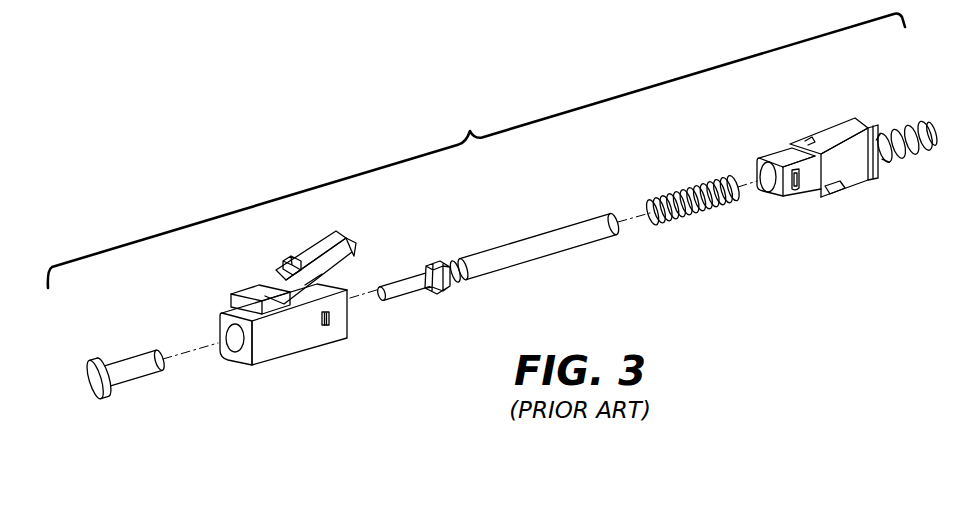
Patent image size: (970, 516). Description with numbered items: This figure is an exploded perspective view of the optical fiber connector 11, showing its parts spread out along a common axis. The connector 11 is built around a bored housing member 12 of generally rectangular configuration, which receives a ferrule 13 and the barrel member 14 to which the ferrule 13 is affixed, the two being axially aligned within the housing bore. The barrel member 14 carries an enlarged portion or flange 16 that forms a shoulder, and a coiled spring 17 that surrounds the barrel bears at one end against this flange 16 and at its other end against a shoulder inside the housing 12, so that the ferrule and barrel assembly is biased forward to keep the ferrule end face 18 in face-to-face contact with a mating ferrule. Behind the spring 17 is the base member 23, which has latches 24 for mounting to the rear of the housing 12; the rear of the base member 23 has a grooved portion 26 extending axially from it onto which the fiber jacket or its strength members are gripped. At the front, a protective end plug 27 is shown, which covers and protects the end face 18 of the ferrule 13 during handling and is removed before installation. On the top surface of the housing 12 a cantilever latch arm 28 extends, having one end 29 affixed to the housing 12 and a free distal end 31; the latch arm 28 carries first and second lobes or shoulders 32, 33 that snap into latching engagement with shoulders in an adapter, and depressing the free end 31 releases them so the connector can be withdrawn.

The connector 11 is at (476, 151).
The housing member 12 is at (270, 352).
The ferrule 13 is at (408, 298).
The barrel member 14 is at (525, 240).
The flange 16 is at (432, 262).
The coiled spring 17 is at (681, 196).
The ferrule end face 18 is at (381, 298).
The base member 23 is at (838, 133).
The latches 24 is at (800, 193).
The grooved portion 26 is at (907, 157).
The protective end plug 27 is at (138, 378).
The cantilever latch arm 28 is at (315, 255).
The one end of latch arm 29 is at (229, 310).
The free distal end 31 is at (343, 232).
The first lobe 32 is at (286, 262).
The second lobe 33 is at (318, 277).